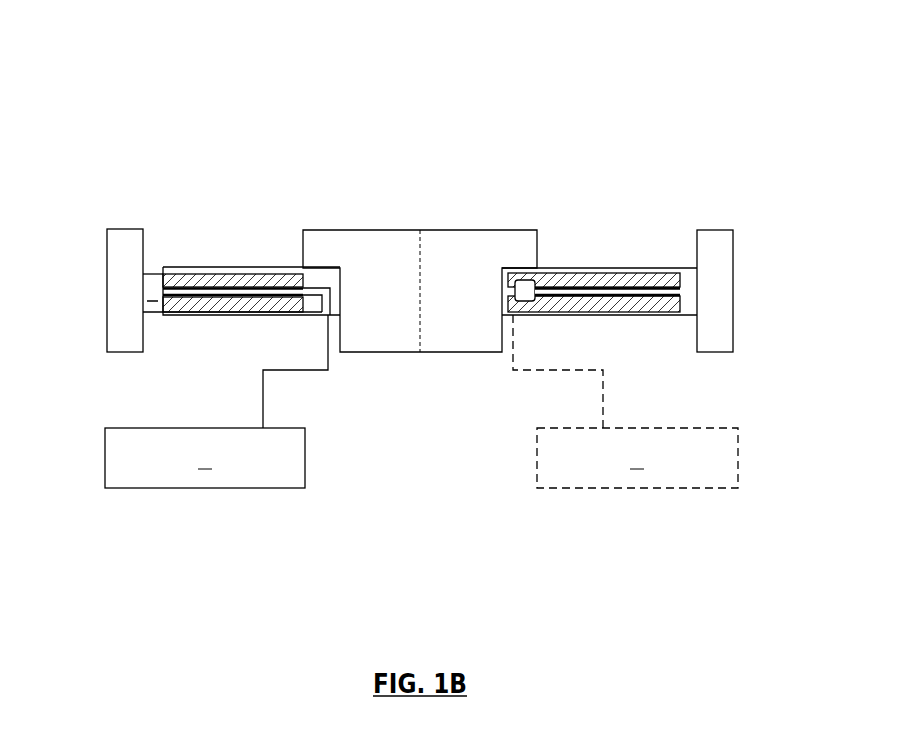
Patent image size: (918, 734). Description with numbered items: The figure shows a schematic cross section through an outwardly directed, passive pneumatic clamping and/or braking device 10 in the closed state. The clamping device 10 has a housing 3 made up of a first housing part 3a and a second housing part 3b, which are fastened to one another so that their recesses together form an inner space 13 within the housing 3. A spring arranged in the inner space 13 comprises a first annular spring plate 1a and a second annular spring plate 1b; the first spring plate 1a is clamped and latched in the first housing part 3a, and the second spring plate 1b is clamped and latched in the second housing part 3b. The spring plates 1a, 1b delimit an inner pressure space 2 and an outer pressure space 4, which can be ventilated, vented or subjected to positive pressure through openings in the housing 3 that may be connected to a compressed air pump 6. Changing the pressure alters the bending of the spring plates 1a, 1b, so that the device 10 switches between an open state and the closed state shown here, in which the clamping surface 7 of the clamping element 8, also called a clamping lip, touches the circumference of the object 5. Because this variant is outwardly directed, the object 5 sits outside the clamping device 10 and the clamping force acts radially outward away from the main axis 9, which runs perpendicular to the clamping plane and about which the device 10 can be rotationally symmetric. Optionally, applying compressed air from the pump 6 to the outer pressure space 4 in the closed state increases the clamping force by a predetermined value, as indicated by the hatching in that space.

The clamping device 10 is at (423, 262).
The main axis 9 is at (420, 230).
The object 5 is at (122, 320).
The housing 3 is at (313, 267).
The outer pressure space 4 is at (228, 267).
The first annular spring plate 1a is at (234, 267).
The second annular spring plate 1b is at (232, 312).
The clamping surface 7 is at (143, 292).
The clamping element 8 is at (152, 302).
The inner space 13 is at (601, 271).
The first housing part 3a is at (569, 268).
The second housing part 3b is at (608, 315).
The inner pressure space 2 is at (622, 290).
The compressed air pump 6 is at (421, 401).